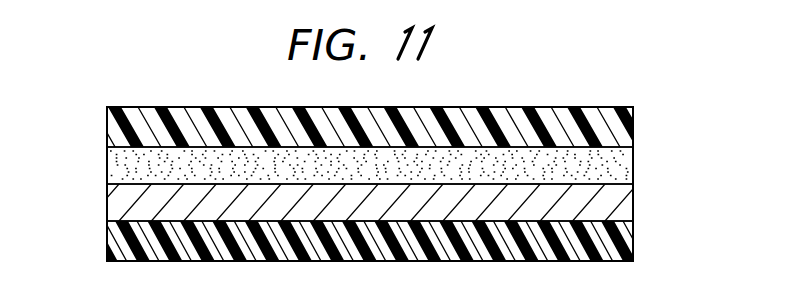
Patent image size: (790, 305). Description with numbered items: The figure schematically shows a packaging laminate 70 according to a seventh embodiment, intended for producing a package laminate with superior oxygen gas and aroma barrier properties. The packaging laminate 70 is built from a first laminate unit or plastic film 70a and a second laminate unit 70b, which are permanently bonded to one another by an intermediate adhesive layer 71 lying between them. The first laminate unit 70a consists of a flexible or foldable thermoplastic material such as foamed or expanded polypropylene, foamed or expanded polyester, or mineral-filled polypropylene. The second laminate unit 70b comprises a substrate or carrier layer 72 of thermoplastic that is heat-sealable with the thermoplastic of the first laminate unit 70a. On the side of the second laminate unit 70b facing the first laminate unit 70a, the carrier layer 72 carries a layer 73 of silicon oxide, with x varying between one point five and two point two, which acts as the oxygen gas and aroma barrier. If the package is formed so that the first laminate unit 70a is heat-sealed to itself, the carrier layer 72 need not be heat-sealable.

The packaging laminate 70 is at (642, 90).
The first laminate unit 70a is at (638, 110).
The second laminate unit 70b is at (638, 185).
The intermediate adhesive layer 71 is at (104, 157).
The substrate or carrier layer 72 is at (104, 235).
The oxygen gas and aroma barrier layer 73 is at (104, 195).